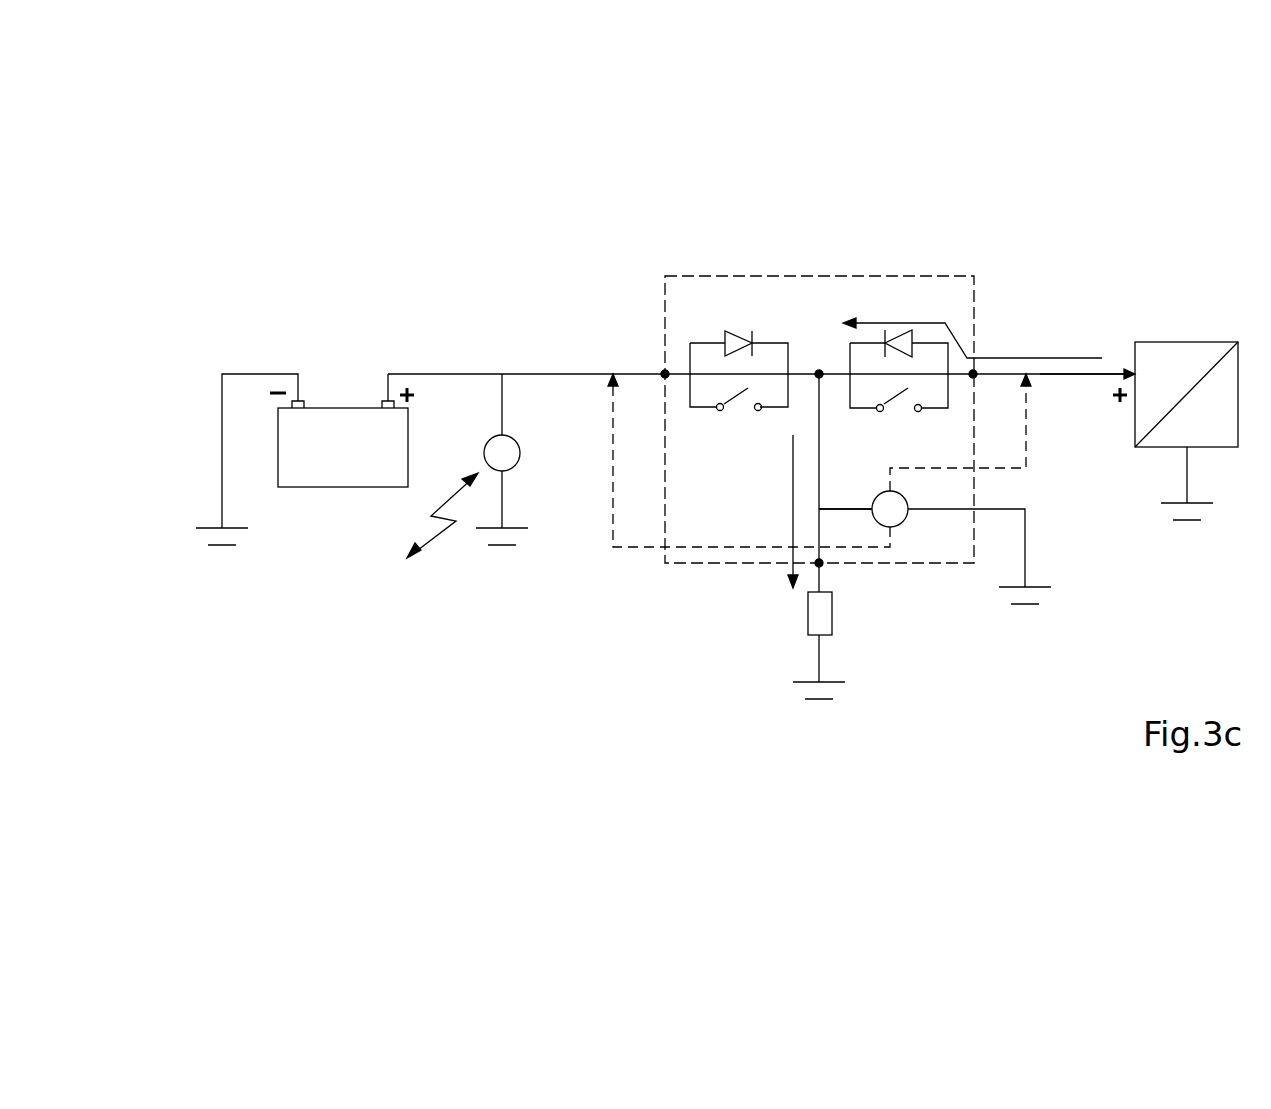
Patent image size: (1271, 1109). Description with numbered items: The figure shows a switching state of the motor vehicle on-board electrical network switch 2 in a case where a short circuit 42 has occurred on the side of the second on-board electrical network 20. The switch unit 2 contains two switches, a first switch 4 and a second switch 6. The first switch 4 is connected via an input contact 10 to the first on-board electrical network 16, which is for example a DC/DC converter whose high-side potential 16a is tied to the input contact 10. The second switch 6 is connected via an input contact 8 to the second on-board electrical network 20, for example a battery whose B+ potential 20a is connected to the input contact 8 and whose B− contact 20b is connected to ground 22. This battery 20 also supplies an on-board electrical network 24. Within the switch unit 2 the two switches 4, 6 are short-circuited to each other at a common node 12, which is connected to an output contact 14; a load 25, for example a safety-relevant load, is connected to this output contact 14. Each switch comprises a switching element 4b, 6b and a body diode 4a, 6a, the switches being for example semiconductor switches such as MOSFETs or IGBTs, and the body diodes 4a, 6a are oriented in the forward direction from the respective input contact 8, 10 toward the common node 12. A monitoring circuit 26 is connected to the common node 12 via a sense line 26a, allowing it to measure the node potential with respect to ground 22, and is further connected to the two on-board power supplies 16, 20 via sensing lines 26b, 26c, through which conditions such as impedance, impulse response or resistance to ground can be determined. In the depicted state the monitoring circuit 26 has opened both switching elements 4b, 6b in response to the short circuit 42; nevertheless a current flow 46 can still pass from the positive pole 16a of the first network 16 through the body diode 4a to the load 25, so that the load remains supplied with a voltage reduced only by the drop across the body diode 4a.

The motor vehicle on-board electrical network switch 2 is at (963, 248).
The first switch 4 is at (930, 344).
The body diode 4a is at (900, 332).
The switching element 4b is at (898, 400).
The second switch 6 is at (704, 365).
The body diode 6a is at (741, 338).
The switching element 6b is at (744, 398).
The input contact 8 is at (660, 370).
The input contact 10 is at (976, 370).
The common node 12 is at (819, 370).
The output contact 14 is at (824, 567).
The first on-board electrical network 16 is at (1189, 340).
The high-side potential 16a is at (1134, 372).
The second on-board electrical network 20 is at (349, 406).
The B+ potential 20a is at (409, 372).
The B− contact 20b is at (281, 372).
The ground 22 is at (225, 548).
The on-board electrical network 24 is at (484, 444).
The load 25 is at (806, 614).
The monitoring circuit 26 is at (905, 521).
The sense line 26a is at (851, 507).
The sensing line 26b is at (1030, 452).
The sensing line 26c is at (612, 479).
The short circuit 42 is at (438, 534).
The current flow 46 is at (1036, 357).